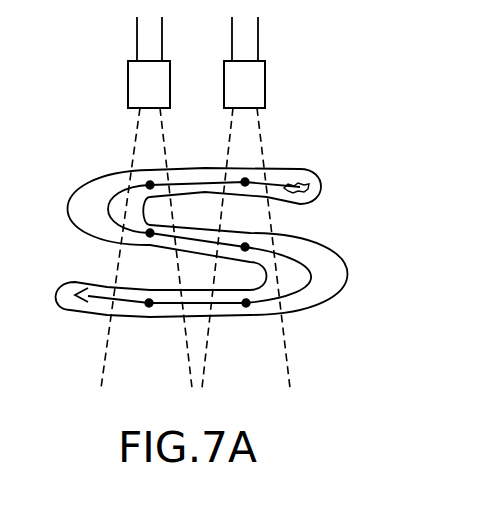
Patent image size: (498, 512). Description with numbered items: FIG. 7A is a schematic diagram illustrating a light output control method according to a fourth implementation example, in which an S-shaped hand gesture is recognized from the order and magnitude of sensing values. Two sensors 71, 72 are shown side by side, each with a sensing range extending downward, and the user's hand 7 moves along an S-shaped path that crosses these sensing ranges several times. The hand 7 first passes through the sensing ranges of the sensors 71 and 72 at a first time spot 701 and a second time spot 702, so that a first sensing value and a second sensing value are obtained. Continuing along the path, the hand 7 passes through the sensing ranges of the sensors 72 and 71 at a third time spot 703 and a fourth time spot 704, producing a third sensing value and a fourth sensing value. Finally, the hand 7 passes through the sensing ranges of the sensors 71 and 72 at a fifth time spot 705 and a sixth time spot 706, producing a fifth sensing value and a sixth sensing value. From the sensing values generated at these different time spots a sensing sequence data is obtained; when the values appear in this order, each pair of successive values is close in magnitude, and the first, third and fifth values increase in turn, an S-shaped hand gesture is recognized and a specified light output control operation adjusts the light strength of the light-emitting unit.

The user's hand 7 is at (305, 186).
The sensor 71 is at (257, 90).
The sensor 72 is at (138, 90).
The first time spot 701 is at (245, 182).
The second time spot 702 is at (150, 185).
The third time spot 703 is at (150, 233).
The fourth time spot 704 is at (245, 247).
The fifth time spot 705 is at (246, 303).
The sixth time spot 706 is at (149, 303).